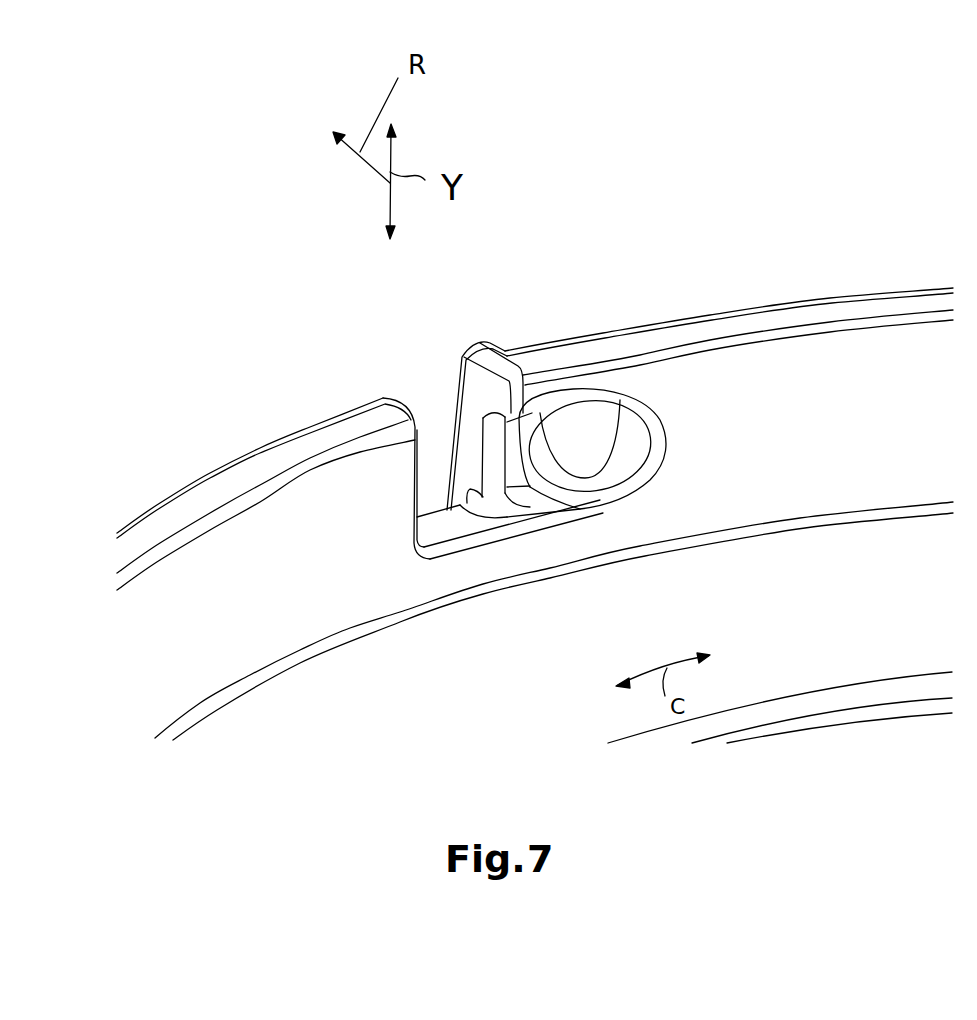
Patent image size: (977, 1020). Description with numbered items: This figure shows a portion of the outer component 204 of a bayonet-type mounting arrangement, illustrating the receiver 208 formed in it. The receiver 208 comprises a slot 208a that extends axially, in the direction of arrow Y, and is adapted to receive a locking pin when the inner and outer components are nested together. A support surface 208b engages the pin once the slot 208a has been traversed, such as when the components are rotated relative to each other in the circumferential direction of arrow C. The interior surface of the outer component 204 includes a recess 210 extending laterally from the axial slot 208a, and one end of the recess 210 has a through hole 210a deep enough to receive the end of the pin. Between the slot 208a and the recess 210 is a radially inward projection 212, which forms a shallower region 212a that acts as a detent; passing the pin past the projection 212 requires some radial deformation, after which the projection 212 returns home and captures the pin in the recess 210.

The outer component 204 is at (762, 315).
The receiver 208 is at (505, 308).
The slot 208a is at (420, 396).
The support surface 208b is at (447, 532).
The recess 210 is at (635, 440).
The through hole 210a is at (572, 431).
The radially inward projection 212 is at (538, 538).
The shallower region 212a is at (513, 462).